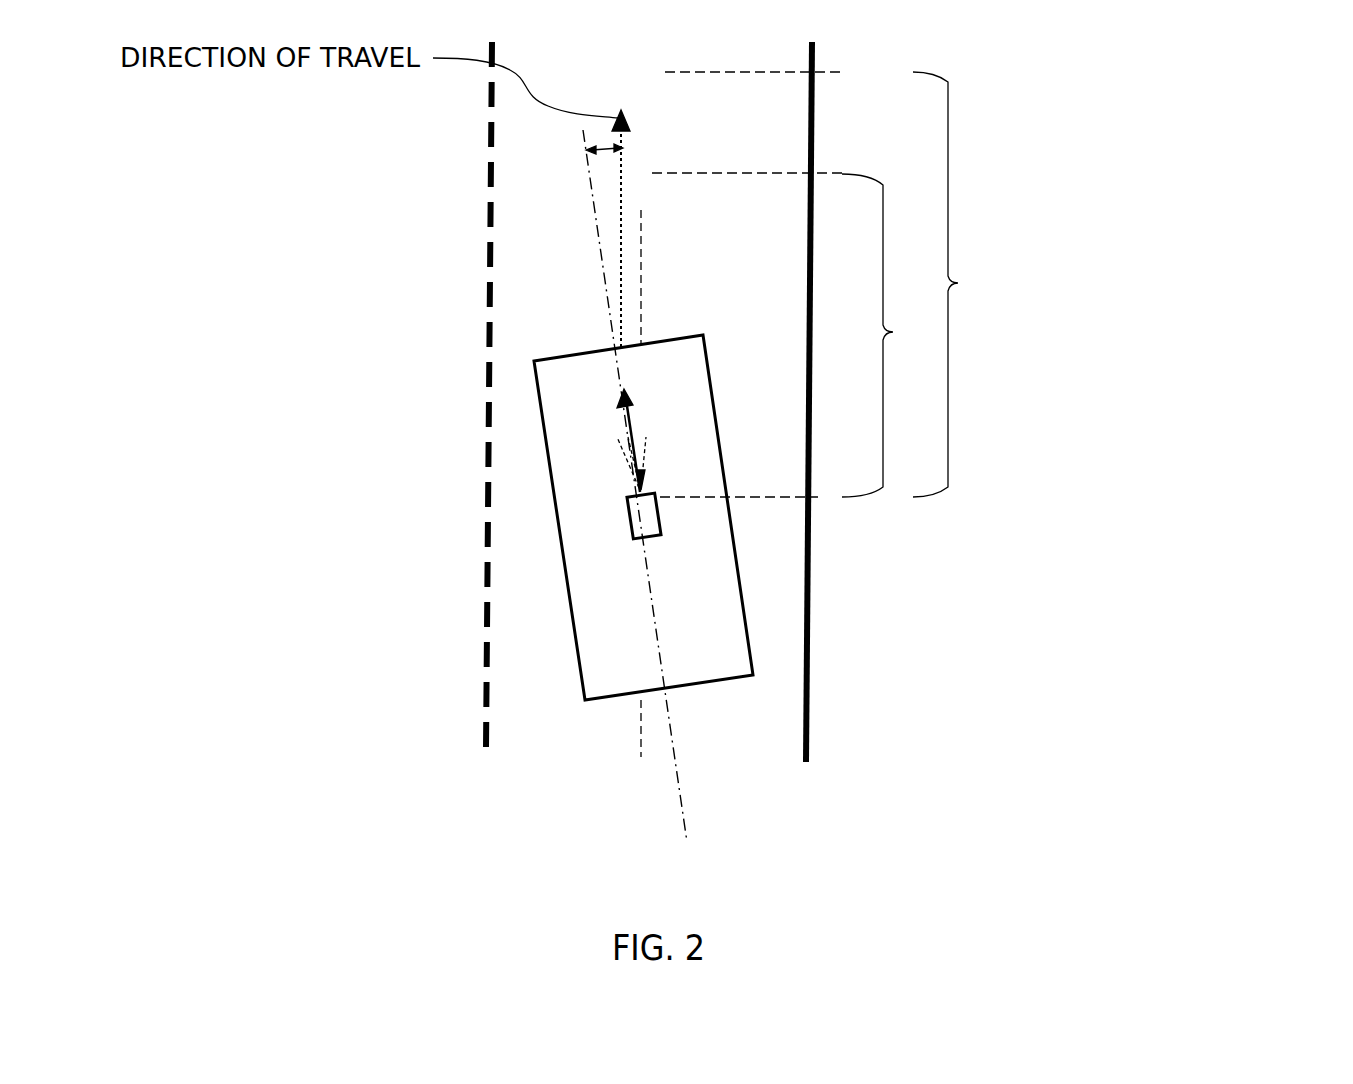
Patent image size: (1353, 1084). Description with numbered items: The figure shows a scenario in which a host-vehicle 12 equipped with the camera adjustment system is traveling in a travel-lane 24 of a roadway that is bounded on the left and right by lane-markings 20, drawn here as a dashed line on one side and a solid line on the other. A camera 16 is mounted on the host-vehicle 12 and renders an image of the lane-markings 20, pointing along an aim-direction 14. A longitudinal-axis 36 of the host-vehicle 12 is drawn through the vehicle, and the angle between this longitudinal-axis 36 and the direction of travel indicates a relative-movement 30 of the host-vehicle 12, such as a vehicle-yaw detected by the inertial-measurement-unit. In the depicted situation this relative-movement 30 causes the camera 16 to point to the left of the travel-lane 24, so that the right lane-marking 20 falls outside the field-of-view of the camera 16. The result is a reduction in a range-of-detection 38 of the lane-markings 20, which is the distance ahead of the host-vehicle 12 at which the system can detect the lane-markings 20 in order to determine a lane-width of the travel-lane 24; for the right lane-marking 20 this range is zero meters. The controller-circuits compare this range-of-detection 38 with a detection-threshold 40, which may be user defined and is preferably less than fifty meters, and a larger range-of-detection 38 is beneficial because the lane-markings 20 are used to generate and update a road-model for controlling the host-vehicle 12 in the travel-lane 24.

The host-vehicle 12 is at (573, 630).
The aim-direction 14 is at (625, 418).
The camera 16 is at (627, 518).
The lane-markings 20 is at (482, 723).
The travel-lane 24 is at (787, 645).
The relative-movement 30 is at (592, 150).
The longitudinal-axis 36 is at (655, 621).
The range-of-detection 38 is at (883, 332).
The detection-threshold 40 is at (948, 283).